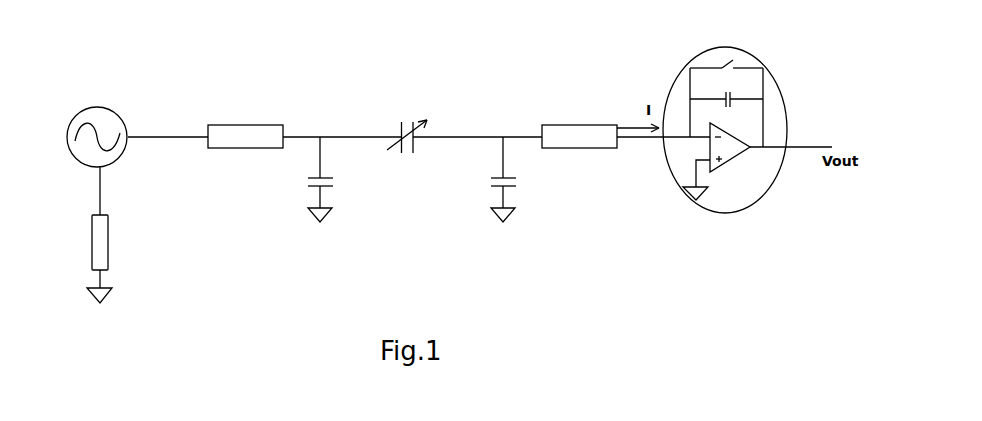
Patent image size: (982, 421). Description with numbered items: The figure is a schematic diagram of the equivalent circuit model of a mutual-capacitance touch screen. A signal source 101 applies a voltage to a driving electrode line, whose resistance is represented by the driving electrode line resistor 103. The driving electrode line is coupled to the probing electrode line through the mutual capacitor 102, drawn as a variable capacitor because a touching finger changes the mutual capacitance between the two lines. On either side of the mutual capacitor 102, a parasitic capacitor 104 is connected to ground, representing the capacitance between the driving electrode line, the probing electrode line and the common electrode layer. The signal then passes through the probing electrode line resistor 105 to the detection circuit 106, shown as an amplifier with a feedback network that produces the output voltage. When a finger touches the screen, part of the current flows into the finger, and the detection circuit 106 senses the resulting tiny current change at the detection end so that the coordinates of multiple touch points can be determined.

The signal source 101 is at (83, 110).
The mutual capacitor 102 is at (404, 122).
The driving electrode line resistor 103 is at (243, 148).
The parasitic capacitor 104 is at (492, 186).
The probing electrode line resistor 105 is at (587, 148).
The detection circuit 106 is at (783, 165).